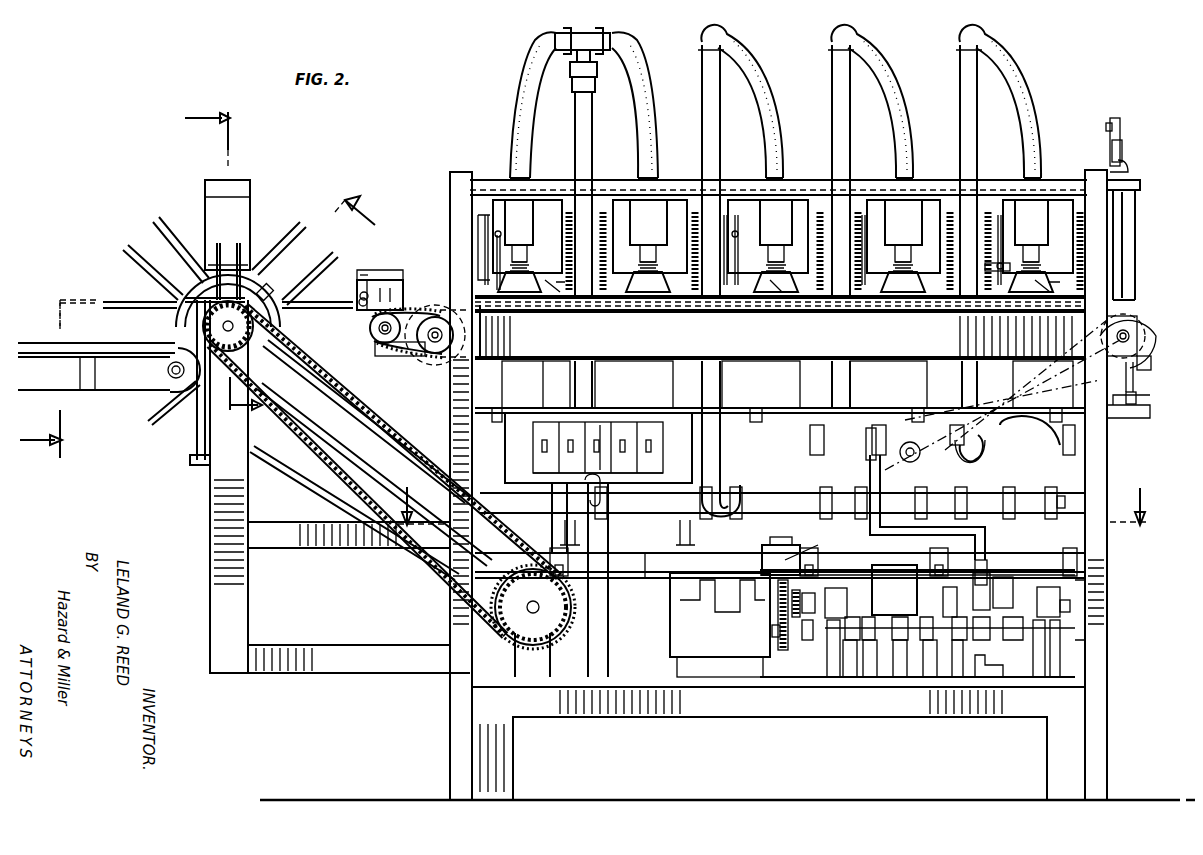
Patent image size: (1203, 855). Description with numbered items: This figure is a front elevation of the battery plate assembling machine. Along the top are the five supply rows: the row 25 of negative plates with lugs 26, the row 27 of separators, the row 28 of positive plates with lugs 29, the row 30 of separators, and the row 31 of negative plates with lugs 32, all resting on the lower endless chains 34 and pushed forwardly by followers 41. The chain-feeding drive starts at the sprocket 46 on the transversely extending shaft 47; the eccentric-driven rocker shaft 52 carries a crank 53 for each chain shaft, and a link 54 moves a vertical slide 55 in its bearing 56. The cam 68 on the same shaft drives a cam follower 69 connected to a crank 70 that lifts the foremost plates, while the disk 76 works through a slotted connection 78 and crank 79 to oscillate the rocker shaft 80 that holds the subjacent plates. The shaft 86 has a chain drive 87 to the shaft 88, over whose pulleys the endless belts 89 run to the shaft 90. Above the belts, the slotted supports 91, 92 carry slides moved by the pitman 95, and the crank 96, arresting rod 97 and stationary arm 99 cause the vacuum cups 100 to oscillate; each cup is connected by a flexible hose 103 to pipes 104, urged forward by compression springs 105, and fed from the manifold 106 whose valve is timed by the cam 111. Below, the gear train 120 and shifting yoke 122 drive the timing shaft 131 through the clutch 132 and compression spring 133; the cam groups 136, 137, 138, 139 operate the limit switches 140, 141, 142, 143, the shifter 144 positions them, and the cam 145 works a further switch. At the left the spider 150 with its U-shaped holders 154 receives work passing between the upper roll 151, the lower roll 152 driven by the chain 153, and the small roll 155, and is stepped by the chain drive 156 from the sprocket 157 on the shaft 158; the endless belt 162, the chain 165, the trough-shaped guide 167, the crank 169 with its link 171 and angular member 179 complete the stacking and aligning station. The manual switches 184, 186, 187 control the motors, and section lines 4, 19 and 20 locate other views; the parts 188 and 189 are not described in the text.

The section line 4- 4 is at (771, 494).
The section line 19- 19 is at (310, 317).
The section line 20- 20 is at (125, 289).
The row of negative battery plates 25 is at (546, 212).
The lugs 26 is at (481, 230).
The row of separators 27 is at (676, 212).
The row of positive plates 28 is at (806, 215).
The lugs 29 is at (738, 215).
The row of separators 30 is at (930, 212).
The row of negative plates 31 is at (1055, 212).
The lugs 32 is at (992, 275).
The lower endless chains 34 is at (630, 287).
The followers 41 is at (496, 200).
The sprocket 46 is at (786, 548).
The transversely extending shaft 47 is at (815, 560).
The rocker shaft 52 is at (648, 560).
The crank 53 is at (550, 556).
The link 54 is at (580, 535).
The vertical slide 55 is at (808, 436).
The bearing 56 is at (552, 384).
The cam 68 is at (985, 575).
The cam follower 69 is at (980, 535).
The crank 70 is at (872, 428).
The disk 76 is at (1140, 388).
The slotted connection 78 is at (1148, 368).
The crank 79 is at (1140, 402).
The rocker shaft 80 is at (1130, 410).
The longitudinally extending shaft 86 is at (910, 456).
The chain drive 87 is at (1045, 365).
The shaft 88 is at (1128, 336).
The endless belts 89 is at (445, 300).
The shaft 90 is at (436, 328).
The slotted support 91 is at (1094, 172).
The slotted support 92 is at (461, 176).
The pitman 95 is at (1136, 218).
The crank 96 is at (1122, 125).
The arresting rod 97 is at (1122, 152).
The stationary arm 99 is at (1130, 168).
The vacuum cups 100 is at (528, 287).
The flexible hose 103 is at (518, 96).
The pipes 104 is at (582, 126).
The compression springs 105 is at (528, 262).
The manifold 106 is at (745, 495).
The cam 111 is at (1085, 582).
The gear train 120 is at (786, 655).
The shifting yoke 122 is at (705, 600).
The timing shaft 131 is at (1050, 630).
The clutch 132 is at (809, 640).
The compression spring 133 is at (772, 637).
The cam group 136 is at (810, 600).
The cam group 137 is at (898, 620).
The cam group 138 is at (980, 600).
The cam group 139 is at (932, 679).
The limit switch 140 is at (848, 679).
The limit switch 141 is at (852, 679).
The limit switch 142 is at (872, 679).
The limit switch 143 is at (900, 679).
The shifter 144 is at (968, 679).
The cam 145 is at (1038, 679).
The spider 150 is at (257, 242).
The upper roll 151 is at (112, 300).
The lower roll 152 is at (385, 350).
The chain 153 is at (434, 352).
The U-shaped receivers or holders 154 is at (160, 225).
The small roll 155 is at (362, 296).
The chain drive 156 is at (400, 468).
The sprocket 157 is at (552, 607).
The shaft 158 is at (533, 614).
The endless belt 162 is at (108, 392).
The chain 165 is at (292, 470).
The trough-shaped guide 167 is at (268, 288).
The crank 169 is at (232, 270).
The link 171 is at (197, 460).
The angular member 179 is at (232, 186).
The manual switch 184 is at (548, 432).
The manual switch 186 is at (632, 428).
The manual switch 187 is at (660, 436).
The divider 188 is at (600, 425).
The base plate 189 is at (570, 460).